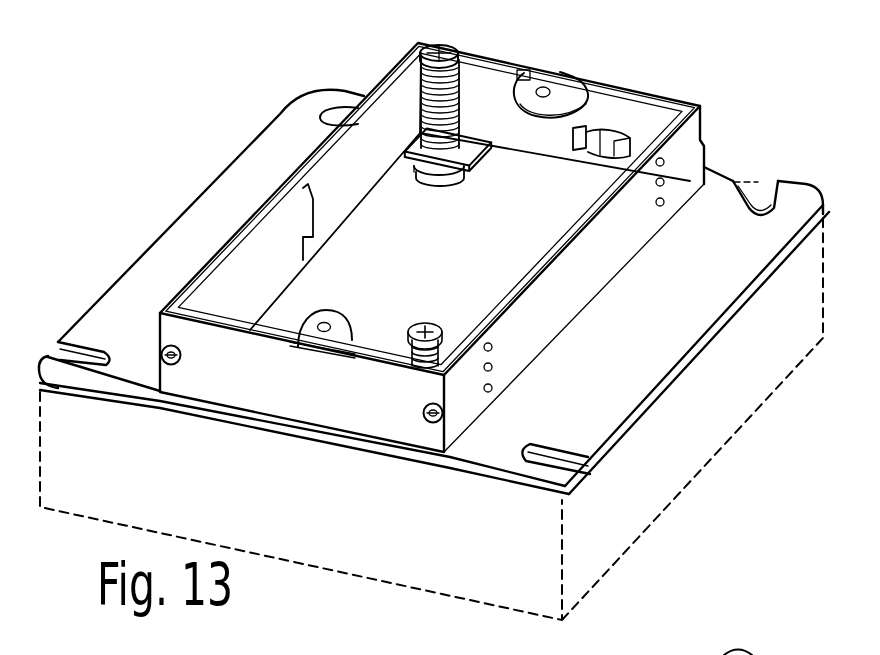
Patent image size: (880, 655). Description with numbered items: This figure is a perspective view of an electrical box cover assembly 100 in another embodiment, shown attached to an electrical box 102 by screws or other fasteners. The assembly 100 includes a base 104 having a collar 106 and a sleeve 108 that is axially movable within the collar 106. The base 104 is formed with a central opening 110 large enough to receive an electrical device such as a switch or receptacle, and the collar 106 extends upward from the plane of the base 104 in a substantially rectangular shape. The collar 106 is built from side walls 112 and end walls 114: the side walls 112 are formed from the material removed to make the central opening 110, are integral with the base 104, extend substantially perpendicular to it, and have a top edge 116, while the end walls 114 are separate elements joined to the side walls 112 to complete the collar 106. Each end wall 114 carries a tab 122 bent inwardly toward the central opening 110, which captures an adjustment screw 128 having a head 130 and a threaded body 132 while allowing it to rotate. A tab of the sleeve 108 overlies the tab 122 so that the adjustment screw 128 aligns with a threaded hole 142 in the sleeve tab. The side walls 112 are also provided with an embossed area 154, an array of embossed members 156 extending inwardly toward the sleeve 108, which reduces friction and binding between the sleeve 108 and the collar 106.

The electrical box cover assembly 100 is at (434, 318).
The electrical box 102 is at (727, 446).
The base 104 is at (662, 343).
The collar 106 is at (449, 260).
The sleeve 108 is at (251, 263).
The central opening 110 is at (447, 260).
The side walls 112 is at (471, 279).
The end walls 114 is at (625, 86).
The top edge 116 is at (320, 143).
The tab 122 is at (480, 165).
The adjustment screw 128 is at (435, 83).
The head 130 is at (427, 181).
The threaded body 132 is at (457, 92).
The threaded hole 142 is at (777, 650).
The embossed area 154 is at (670, 183).
The embossed members 156 is at (497, 388).